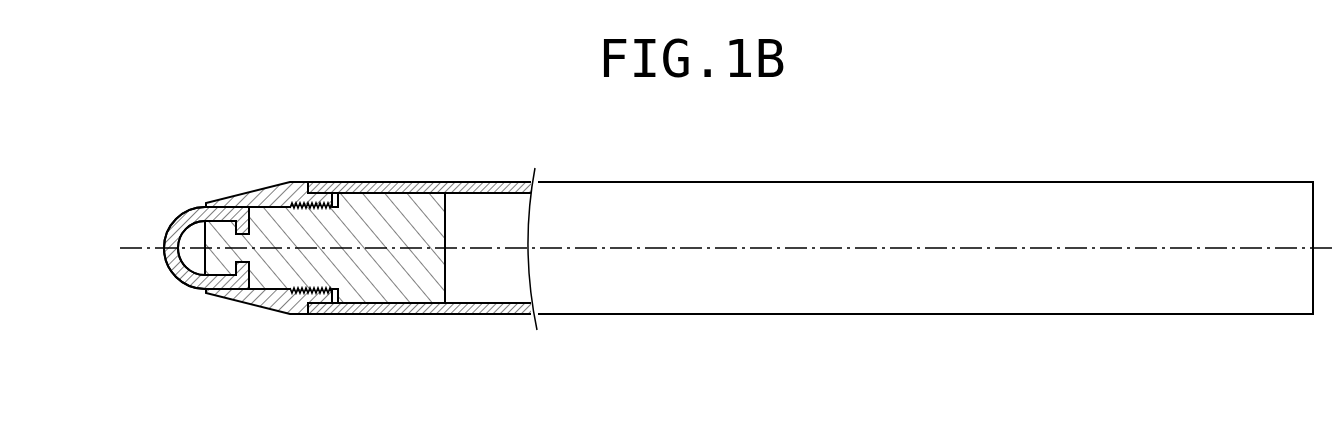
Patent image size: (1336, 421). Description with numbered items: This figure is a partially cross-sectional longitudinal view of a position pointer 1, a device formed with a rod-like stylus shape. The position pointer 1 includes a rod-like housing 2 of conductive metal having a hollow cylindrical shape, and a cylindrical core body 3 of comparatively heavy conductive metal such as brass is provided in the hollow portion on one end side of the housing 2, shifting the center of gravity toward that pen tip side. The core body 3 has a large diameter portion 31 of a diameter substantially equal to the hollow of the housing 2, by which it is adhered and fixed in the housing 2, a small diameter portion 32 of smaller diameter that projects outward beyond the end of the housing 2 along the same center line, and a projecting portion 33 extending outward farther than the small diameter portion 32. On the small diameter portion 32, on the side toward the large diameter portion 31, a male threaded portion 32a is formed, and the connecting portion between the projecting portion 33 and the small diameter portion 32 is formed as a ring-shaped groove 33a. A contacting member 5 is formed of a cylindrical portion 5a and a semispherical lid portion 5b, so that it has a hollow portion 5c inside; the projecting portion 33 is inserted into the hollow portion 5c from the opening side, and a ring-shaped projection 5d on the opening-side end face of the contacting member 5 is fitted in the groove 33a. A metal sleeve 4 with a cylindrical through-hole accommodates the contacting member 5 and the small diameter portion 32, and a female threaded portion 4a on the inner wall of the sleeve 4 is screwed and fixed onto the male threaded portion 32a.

The position pointer 1 is at (945, 172).
The housing 2 is at (723, 190).
The core body 3 is at (394, 190).
The large diameter portion 31 is at (390, 298).
The small diameter portion 32 is at (286, 268).
The male threaded portion 32a is at (313, 287).
The projecting portion 33 is at (225, 266).
The ring-shaped groove 33a is at (241, 297).
The sleeve 4 is at (264, 190).
The female threaded portion 4a is at (300, 204).
The contacting member 5 is at (166, 262).
The cylindrical portion 5a is at (208, 203).
The lid portion 5b is at (173, 224).
The hollow portion 5c is at (180, 238).
The ring-shaped projection 5d is at (243, 202).